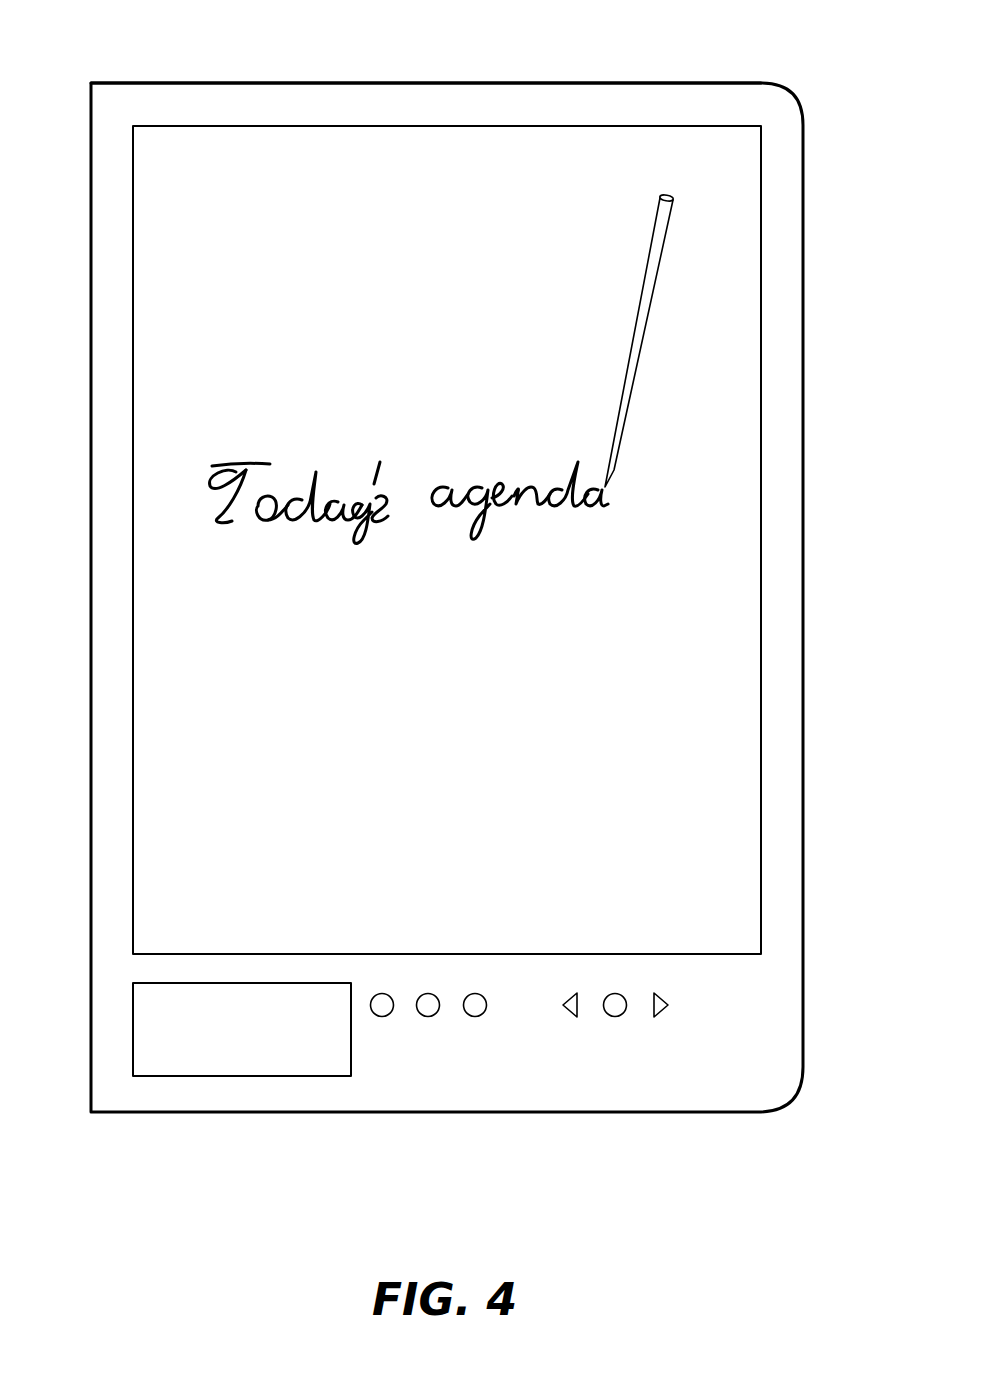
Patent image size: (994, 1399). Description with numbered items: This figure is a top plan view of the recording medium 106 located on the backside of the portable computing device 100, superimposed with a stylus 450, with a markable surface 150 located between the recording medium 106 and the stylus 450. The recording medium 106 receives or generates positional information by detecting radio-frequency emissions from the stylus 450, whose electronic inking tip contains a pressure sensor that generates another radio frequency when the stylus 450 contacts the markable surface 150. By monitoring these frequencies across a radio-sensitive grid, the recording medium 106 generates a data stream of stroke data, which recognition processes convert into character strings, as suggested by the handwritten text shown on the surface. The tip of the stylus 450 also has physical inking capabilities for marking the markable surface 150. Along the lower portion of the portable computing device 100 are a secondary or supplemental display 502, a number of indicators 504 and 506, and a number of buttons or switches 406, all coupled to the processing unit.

The portable computing device 100 is at (705, 28).
The recording medium 106 is at (308, 105).
The markable surface 150 is at (702, 485).
The stylus 450 is at (640, 317).
The secondary or supplemental display 502 is at (196, 1060).
The indicator 504 is at (382, 1012).
The indicators 506 is at (475, 1012).
The buttons or switches 406 is at (660, 1012).